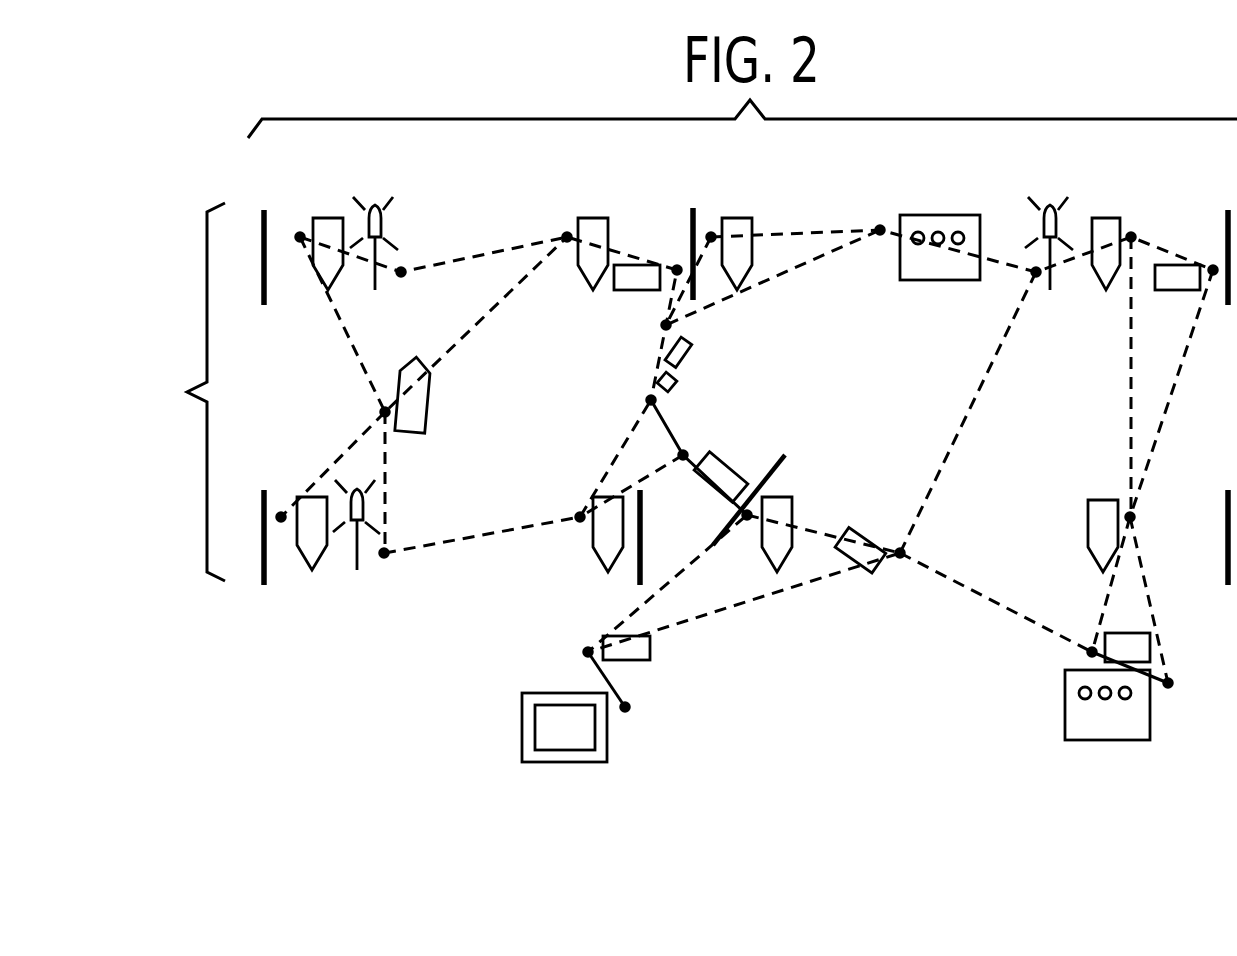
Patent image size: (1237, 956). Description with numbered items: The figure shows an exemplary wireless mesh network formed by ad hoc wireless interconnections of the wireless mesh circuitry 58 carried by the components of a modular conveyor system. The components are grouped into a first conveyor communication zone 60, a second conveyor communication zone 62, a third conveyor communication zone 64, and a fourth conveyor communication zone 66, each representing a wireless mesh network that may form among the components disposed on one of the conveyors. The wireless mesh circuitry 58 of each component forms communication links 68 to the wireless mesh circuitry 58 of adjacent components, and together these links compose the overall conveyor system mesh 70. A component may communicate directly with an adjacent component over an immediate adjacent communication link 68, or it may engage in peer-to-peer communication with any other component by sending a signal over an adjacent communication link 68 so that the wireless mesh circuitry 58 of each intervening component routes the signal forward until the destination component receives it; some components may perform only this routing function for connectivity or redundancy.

The wireless mesh circuitry 58 is at (300, 237).
The first conveyor communication zone 60 is at (494, 187).
The second conveyor communication zone 62 is at (1027, 237).
The third conveyor communication zone 64 is at (515, 604).
The fourth conveyor communication zone 66 is at (1027, 572).
The communication link 68 is at (797, 226).
The conveyor system mesh 70 is at (186, 392).